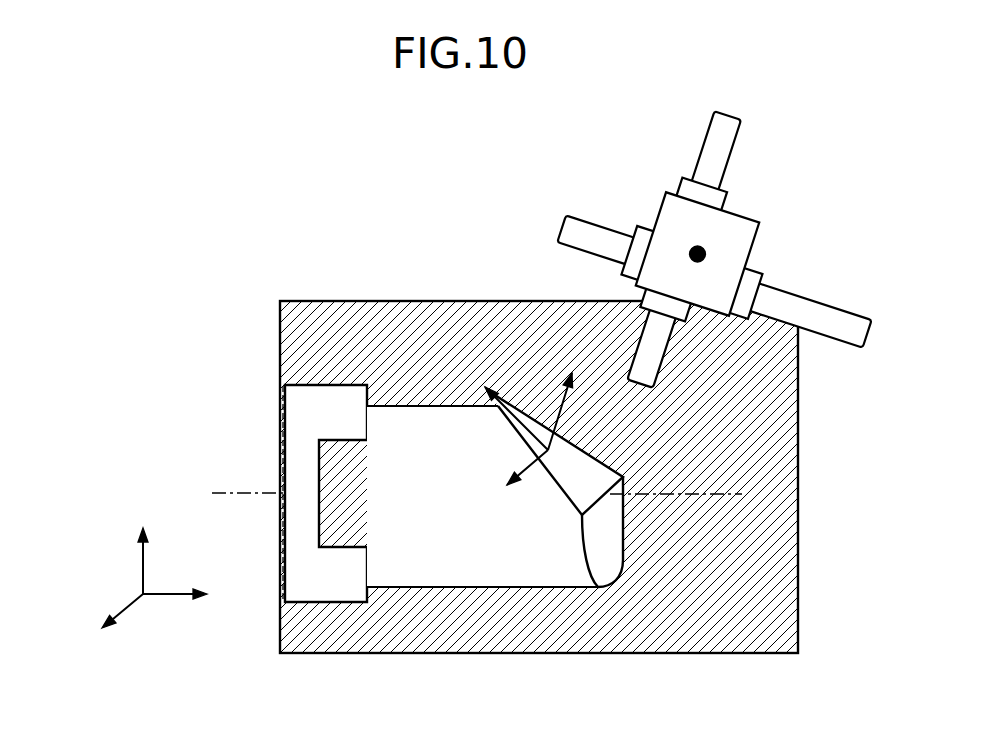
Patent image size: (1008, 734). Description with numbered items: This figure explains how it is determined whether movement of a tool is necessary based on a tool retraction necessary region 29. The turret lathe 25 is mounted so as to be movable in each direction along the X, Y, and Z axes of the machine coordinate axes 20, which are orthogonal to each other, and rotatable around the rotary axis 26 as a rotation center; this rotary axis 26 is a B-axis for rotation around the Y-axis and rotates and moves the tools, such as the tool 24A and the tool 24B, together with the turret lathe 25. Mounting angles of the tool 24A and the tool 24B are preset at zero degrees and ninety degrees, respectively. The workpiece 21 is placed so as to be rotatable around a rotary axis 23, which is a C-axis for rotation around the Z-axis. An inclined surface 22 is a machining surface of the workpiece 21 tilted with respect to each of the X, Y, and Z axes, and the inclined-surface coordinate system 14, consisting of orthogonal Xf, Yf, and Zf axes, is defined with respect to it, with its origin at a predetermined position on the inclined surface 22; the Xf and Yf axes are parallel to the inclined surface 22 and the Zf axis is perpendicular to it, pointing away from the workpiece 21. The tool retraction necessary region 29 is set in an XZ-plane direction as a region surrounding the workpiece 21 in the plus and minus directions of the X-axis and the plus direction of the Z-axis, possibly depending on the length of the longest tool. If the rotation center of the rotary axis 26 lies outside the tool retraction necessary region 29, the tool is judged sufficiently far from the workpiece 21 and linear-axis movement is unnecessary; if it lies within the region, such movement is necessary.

The inclined-surface coordinate system 14 is at (528, 395).
The machine coordinate axes 20 is at (122, 562).
The workpiece 21 is at (407, 420).
The inclined surface 22 is at (587, 468).
The rotary axis 23 is at (716, 494).
The tool 24A is at (664, 353).
The tool 24B is at (832, 304).
The turret lathe 25 is at (736, 221).
The rotary axis 26 is at (694, 248).
The tool retraction necessary region 29 is at (755, 598).